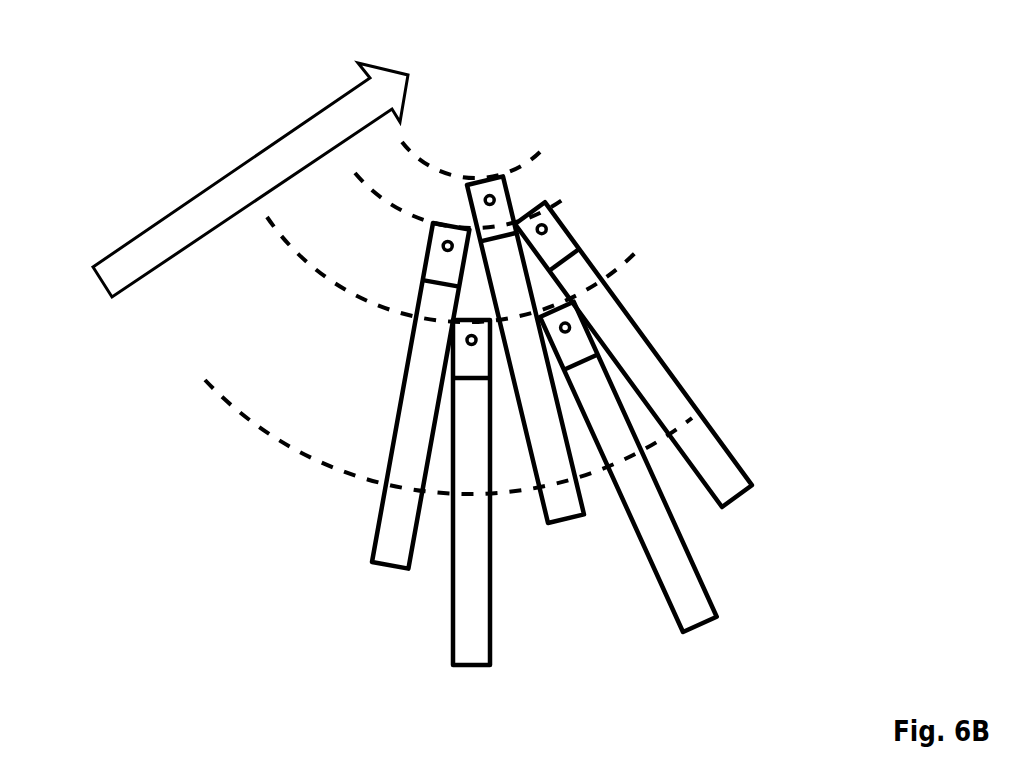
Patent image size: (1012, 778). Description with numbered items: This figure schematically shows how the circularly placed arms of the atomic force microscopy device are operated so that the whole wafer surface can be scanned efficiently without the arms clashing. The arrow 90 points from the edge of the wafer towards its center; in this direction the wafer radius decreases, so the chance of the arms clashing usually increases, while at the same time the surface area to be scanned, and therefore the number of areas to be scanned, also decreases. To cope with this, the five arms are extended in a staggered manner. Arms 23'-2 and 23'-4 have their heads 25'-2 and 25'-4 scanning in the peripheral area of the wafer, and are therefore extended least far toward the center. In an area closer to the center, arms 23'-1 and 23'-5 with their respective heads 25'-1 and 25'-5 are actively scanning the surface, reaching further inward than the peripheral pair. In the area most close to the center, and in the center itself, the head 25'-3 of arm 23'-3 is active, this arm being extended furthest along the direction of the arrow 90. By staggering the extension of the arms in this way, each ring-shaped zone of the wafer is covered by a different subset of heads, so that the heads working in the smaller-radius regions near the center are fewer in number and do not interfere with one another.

The arrow 90 is at (270, 167).
The arm 23'-1 is at (637, 354).
The arm 23'-2 is at (685, 467).
The arm 23'-3 is at (544, 416).
The arm 23'-4 is at (508, 540).
The arm 23'-5 is at (345, 396).
The head 25'-1 is at (625, 196).
The head 25'-2 is at (599, 465).
The head 25'-3 is at (582, 152).
The head 25'-4 is at (508, 462).
The head 25'-5 is at (390, 246).